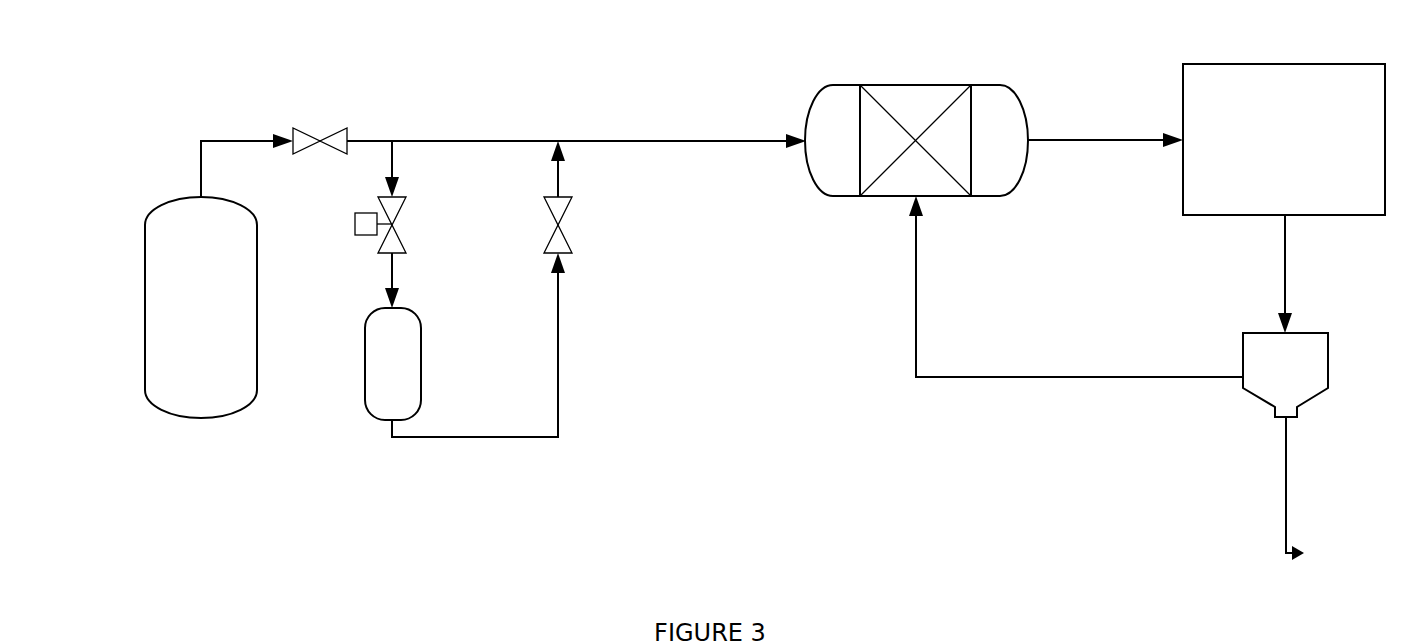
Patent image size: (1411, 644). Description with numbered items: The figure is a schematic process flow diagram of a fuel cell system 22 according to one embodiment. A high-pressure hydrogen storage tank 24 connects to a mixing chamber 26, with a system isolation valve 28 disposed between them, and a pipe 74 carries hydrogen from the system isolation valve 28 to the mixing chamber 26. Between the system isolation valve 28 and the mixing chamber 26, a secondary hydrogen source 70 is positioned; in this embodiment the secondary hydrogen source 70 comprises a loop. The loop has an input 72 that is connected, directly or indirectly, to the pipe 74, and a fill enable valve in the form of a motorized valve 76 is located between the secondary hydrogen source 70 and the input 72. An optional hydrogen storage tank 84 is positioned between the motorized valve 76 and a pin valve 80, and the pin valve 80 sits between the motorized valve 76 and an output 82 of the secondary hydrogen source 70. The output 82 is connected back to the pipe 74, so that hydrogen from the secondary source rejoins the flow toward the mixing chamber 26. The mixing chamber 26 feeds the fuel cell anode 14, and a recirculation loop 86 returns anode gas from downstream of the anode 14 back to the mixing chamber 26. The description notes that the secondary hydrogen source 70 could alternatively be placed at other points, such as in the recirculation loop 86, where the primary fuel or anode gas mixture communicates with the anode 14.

The anode 14 is at (1284, 139).
The fuel cell system 22 is at (484, 46).
The high-pressure hydrogen storage tank 24 is at (141, 348).
The mixing chamber 26 is at (822, 202).
The system isolation valve 28 is at (319, 134).
The secondary hydrogen source 70 is at (463, 472).
The input 72 is at (403, 152).
The pipe 74 is at (455, 137).
The motorized valve 76 is at (352, 217).
The pin valve 80 is at (582, 231).
The output 82 is at (563, 137).
The hydrogen storage tank 84 is at (363, 409).
The recirculation loop 86 is at (1091, 377).